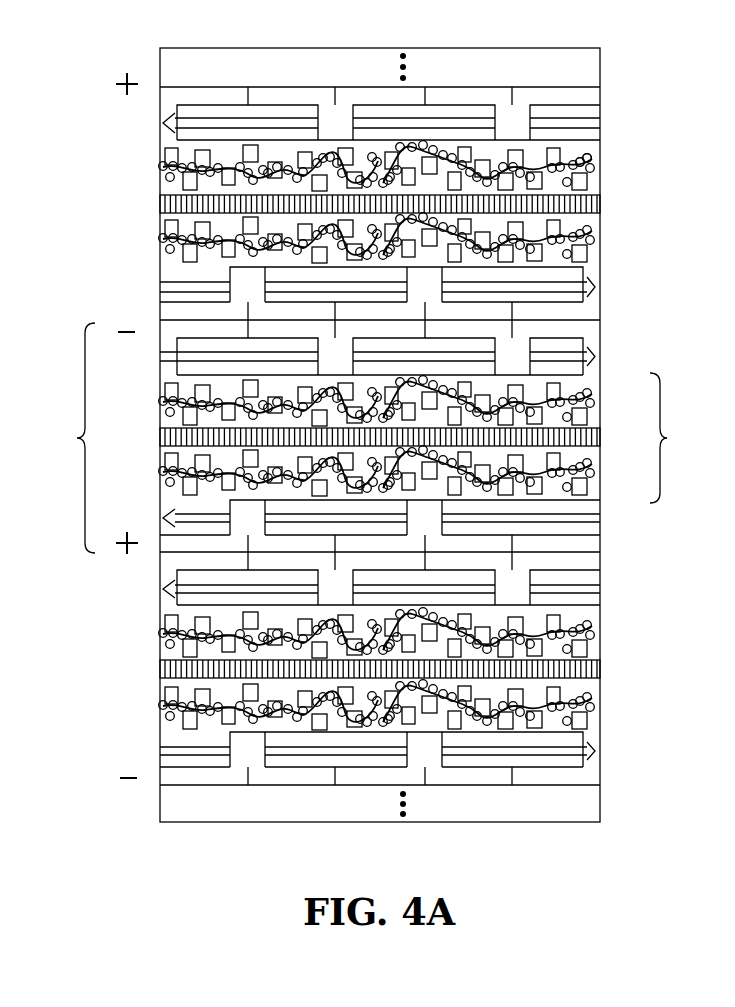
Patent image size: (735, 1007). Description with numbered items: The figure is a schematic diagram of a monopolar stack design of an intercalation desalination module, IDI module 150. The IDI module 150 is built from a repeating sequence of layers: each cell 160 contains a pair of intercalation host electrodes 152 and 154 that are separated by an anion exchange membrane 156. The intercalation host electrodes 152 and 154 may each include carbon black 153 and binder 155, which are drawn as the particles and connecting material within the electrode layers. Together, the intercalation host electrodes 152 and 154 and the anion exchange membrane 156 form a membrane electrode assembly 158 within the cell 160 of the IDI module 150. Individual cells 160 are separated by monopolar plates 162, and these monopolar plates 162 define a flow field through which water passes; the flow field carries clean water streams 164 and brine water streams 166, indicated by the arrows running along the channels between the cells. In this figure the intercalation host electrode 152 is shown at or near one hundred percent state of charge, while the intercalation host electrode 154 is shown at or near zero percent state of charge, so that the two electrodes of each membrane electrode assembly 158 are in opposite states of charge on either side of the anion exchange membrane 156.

The IDI module 150 is at (146, 805).
The intercalation host electrode 152 is at (590, 252).
The carbon black 153 is at (160, 182).
The intercalation host electrode 154 is at (590, 182).
The binder 155 is at (578, 157).
The anion exchange membrane 156 is at (157, 203).
The membrane electrode assembly 158 is at (692, 438).
The cell 160 is at (65, 438).
The monopolar plate 162 is at (148, 321).
The clean water stream 164 is at (598, 273).
The brine water stream 166 is at (595, 122).